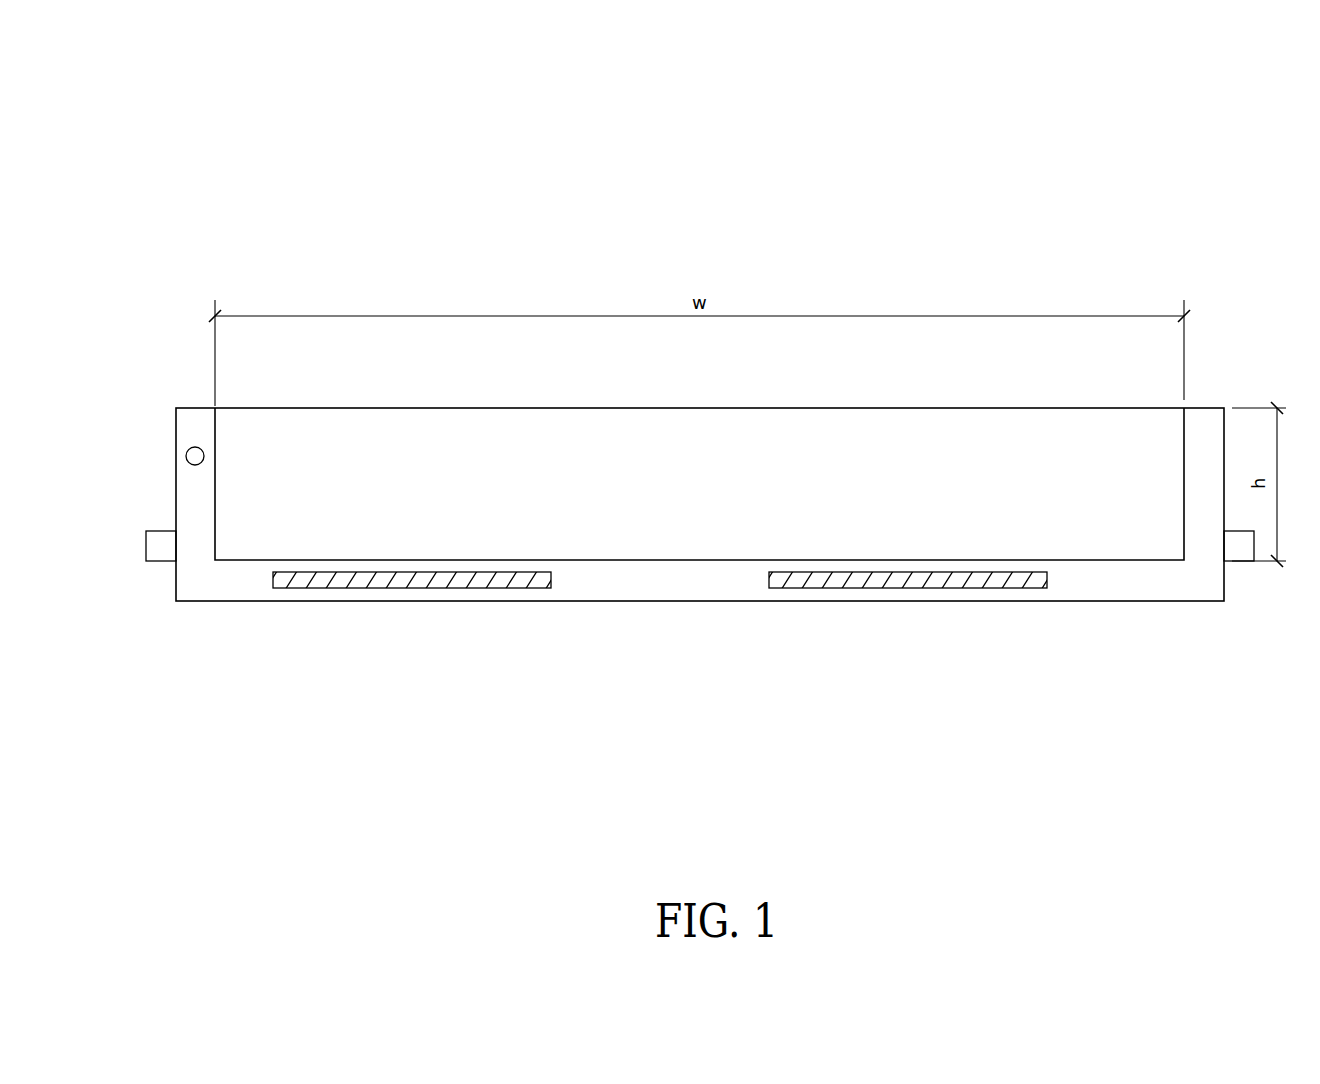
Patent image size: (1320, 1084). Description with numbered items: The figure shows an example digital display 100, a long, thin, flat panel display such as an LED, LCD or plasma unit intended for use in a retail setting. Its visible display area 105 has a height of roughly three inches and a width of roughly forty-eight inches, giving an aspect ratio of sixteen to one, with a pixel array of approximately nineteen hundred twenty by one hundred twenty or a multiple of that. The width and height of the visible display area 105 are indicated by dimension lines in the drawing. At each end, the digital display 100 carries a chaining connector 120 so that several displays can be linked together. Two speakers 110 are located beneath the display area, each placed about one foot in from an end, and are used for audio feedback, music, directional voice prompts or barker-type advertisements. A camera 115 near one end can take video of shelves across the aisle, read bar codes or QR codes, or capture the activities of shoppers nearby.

The digital display 100 is at (1237, 112).
The visible display area 105 is at (698, 430).
The speakers 110 is at (400, 583).
The camera 115 is at (206, 454).
The chaining connectors 120 is at (164, 565).